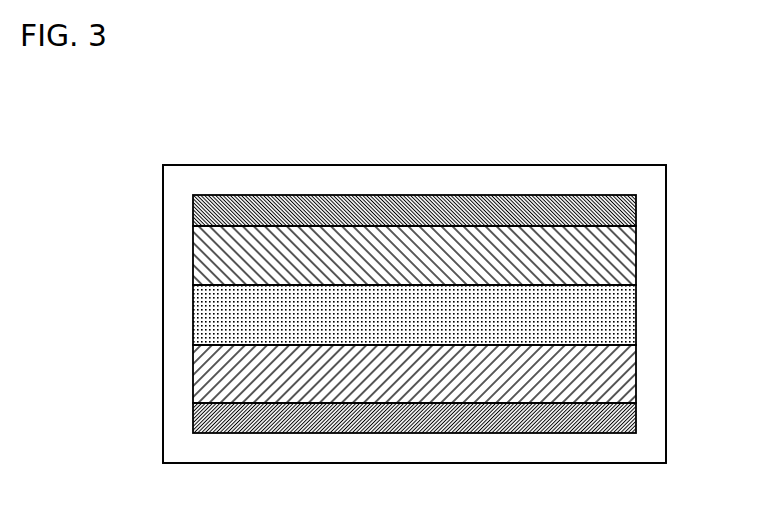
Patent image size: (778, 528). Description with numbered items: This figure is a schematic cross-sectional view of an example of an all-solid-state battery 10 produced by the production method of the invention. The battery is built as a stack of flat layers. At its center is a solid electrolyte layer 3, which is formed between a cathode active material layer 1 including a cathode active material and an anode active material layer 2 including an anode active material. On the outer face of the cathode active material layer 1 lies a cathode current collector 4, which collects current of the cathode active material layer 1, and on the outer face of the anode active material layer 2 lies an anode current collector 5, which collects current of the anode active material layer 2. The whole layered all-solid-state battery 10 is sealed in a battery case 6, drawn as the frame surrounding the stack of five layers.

The all-solid-state battery 10 is at (678, 135).
The cathode active material layer 1 is at (588, 372).
The anode active material layer 2 is at (590, 255).
The solid electrolyte layer 3 is at (590, 313).
The cathode current collector 4 is at (588, 420).
The anode current collector 5 is at (590, 207).
The battery case 6 is at (648, 444).